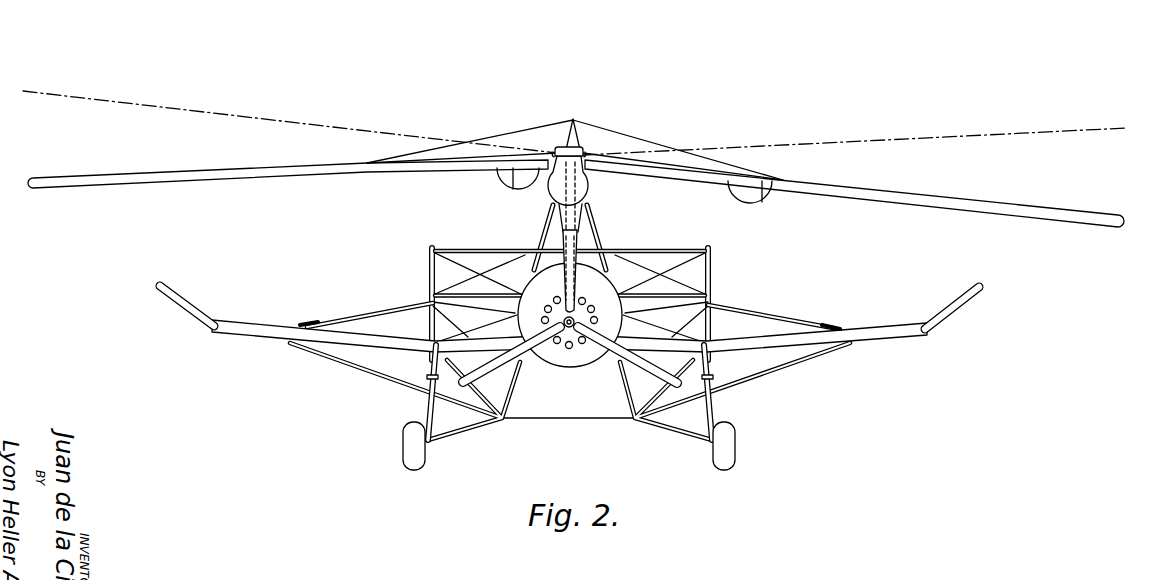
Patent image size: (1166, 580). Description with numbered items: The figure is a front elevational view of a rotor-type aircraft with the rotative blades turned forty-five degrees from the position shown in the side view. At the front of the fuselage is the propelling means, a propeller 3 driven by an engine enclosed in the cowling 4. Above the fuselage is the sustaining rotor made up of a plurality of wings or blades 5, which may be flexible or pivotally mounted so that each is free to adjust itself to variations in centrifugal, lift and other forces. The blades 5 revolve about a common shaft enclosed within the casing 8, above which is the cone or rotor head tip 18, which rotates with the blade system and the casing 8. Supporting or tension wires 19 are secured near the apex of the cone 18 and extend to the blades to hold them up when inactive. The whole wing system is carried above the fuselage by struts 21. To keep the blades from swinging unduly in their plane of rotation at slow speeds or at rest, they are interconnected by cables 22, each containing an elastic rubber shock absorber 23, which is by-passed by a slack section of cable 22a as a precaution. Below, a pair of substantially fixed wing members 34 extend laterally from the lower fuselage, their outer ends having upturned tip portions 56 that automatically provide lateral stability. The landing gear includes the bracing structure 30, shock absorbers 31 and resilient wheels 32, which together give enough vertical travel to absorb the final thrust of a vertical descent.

The propeller 3 is at (488, 370).
The cowling 4 is at (570, 315).
The wings or blades 5 is at (550, 193).
The casing 8 is at (579, 152).
The cone or rotor head tip 18 is at (575, 121).
The supporting or tension wires 19 is at (497, 133).
The struts 21 is at (548, 230).
The cables 22 is at (617, 175).
The slack section of cable 22a is at (512, 192).
The rubber shock absorber 23 is at (500, 172).
The bracing structure 30 is at (483, 430).
The shock absorbers 31 is at (427, 401).
The wheels 32 is at (403, 446).
The fixed wing members 34 is at (261, 326).
The upturned tip portions 56 is at (178, 297).